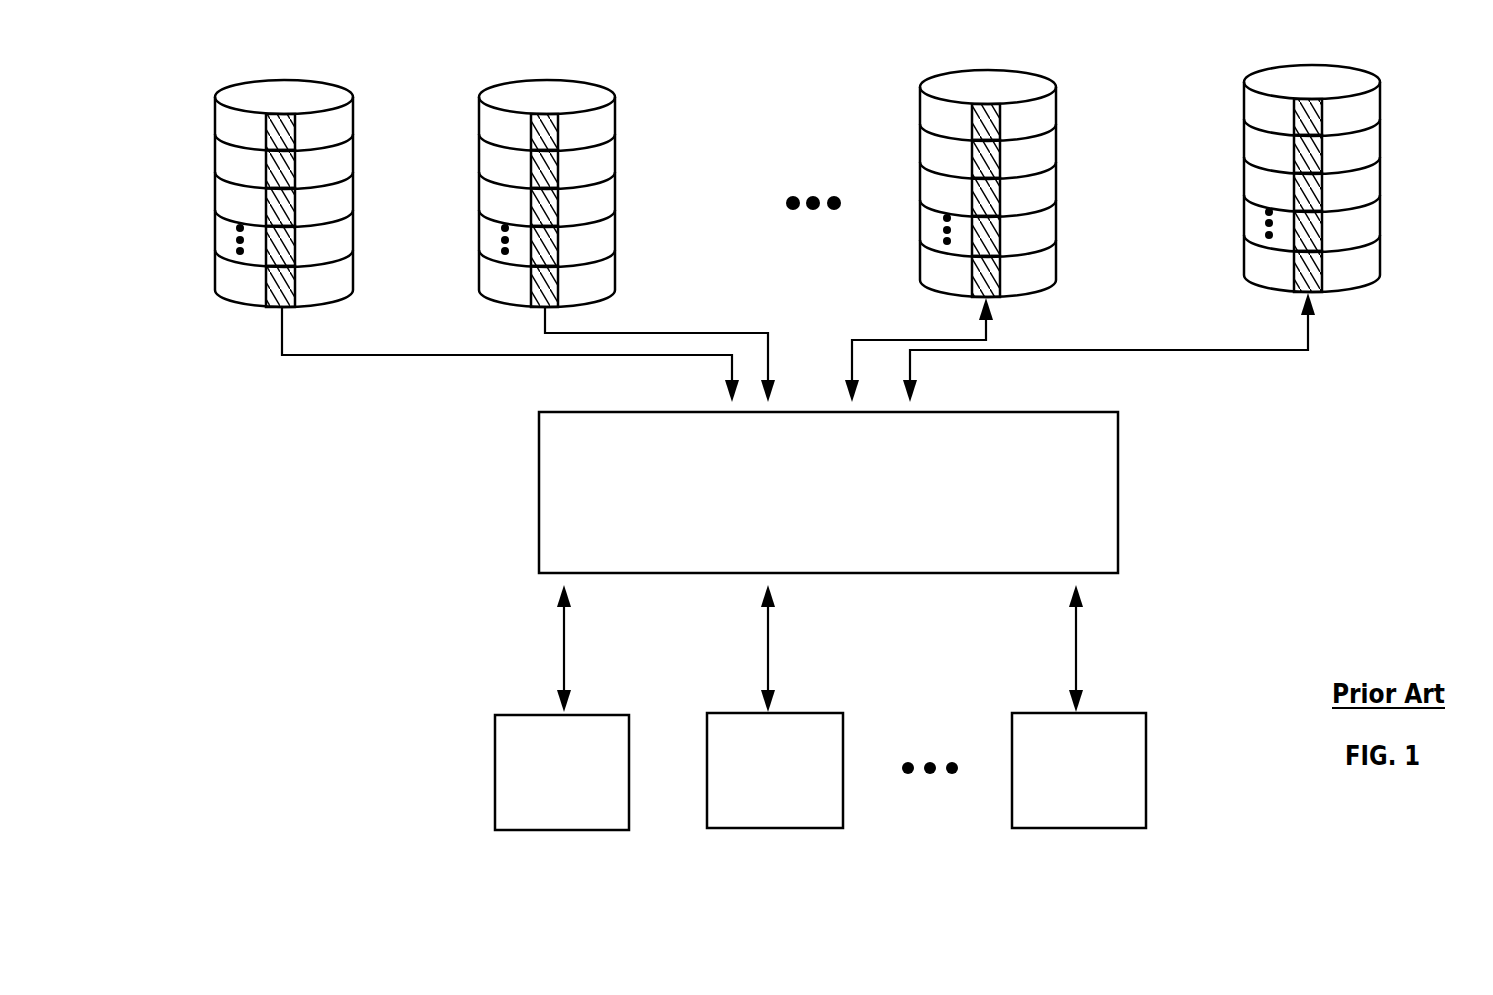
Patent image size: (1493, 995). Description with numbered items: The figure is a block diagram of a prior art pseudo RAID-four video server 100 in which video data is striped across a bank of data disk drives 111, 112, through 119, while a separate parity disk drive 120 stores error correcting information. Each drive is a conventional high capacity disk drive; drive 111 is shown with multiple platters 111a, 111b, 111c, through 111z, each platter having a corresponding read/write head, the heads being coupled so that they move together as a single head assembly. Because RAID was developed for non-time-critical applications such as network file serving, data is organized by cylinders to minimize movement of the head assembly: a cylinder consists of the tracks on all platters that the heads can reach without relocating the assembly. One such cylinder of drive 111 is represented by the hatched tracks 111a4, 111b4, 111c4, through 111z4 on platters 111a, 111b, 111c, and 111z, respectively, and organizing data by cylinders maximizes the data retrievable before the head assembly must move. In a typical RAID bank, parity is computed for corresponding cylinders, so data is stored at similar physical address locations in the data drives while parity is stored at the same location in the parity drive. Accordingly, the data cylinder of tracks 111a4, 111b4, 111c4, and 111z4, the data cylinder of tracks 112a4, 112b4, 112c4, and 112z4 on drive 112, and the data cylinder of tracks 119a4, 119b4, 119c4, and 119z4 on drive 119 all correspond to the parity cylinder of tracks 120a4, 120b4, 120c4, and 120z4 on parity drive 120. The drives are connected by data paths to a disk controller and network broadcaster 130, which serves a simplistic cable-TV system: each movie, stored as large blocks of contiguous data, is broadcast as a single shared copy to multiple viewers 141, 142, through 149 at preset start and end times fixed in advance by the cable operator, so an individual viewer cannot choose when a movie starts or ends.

The pseudo RAID-4 video server 100 is at (352, 572).
The data disk drive 111 is at (282, 79).
The data disk drive 112 is at (546, 79).
The data disk drive 119 is at (992, 69).
The parity disk drive 120 is at (1311, 64).
The platter 111a is at (229, 127).
The platter 111b is at (229, 165).
The platter 111c is at (229, 203).
The platter 111z is at (229, 277).
The track 111a4 is at (299, 131).
The track 111b4 is at (299, 172).
The track 111c4 is at (299, 215).
The track 111z4 is at (299, 287).
The track 112a4 is at (560, 130).
The track 112b4 is at (560, 172).
The track 112c4 is at (560, 213).
The track 112z4 is at (560, 287).
The track 119a4 is at (1002, 125).
The track 119b4 is at (1002, 162).
The track 119c4 is at (1002, 200).
The track 119z4 is at (1002, 272).
The track 120a4 is at (1323, 117).
The track 120b4 is at (1323, 158).
The track 120c4 is at (1323, 195).
The track 120z4 is at (1323, 265).
The network broadcaster 130 is at (1118, 476).
The viewer 141 is at (552, 830).
The viewer 142 is at (775, 828).
The viewer 149 is at (1080, 828).